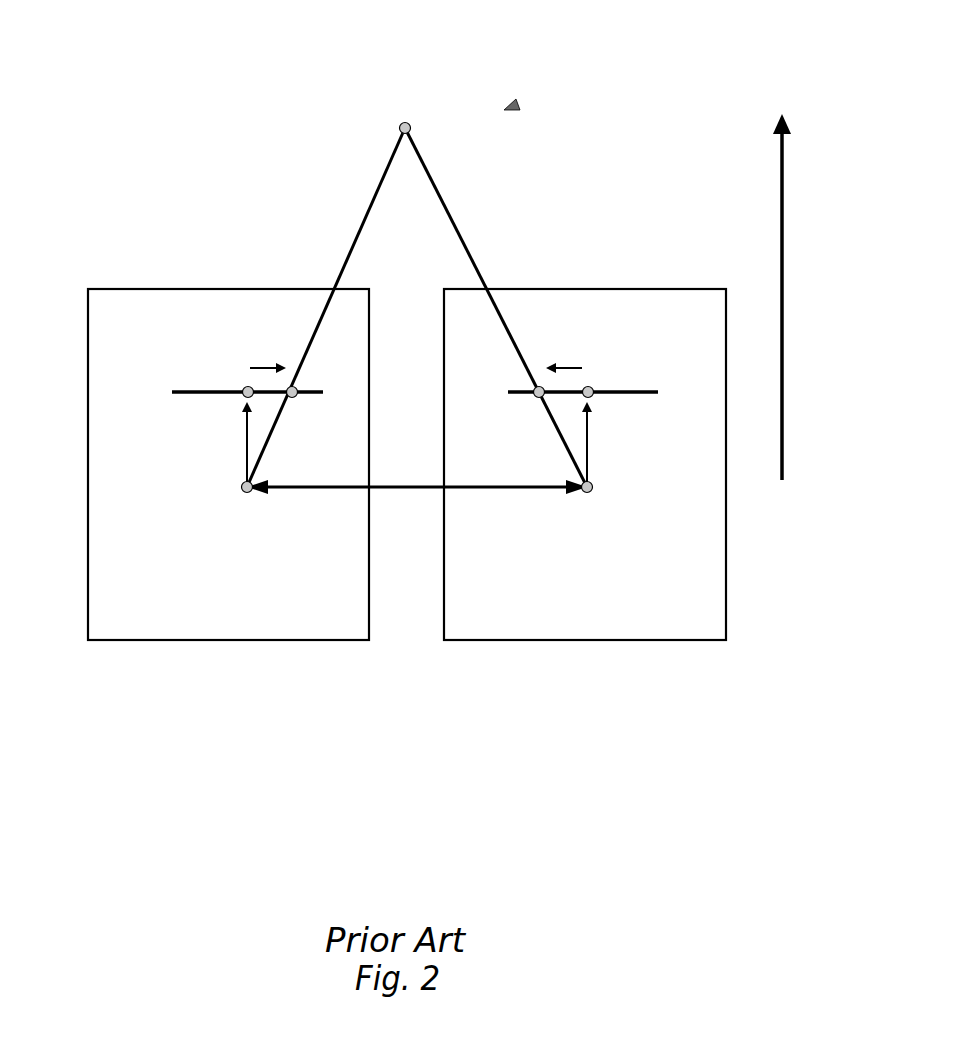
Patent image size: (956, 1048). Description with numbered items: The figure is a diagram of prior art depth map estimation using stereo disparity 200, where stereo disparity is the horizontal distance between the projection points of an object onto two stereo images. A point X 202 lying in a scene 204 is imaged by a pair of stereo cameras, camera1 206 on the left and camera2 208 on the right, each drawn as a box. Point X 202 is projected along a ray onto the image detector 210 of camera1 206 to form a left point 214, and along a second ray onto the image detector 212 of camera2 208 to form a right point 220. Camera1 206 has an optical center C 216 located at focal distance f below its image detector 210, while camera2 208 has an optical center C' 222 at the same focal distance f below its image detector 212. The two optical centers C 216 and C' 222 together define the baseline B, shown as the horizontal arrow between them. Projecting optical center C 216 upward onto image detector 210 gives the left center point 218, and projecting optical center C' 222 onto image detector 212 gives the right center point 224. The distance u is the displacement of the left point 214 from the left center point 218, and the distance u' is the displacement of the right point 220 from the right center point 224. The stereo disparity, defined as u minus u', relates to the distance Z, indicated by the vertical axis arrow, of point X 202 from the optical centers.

The stereo disparity depth map estimation 200 is at (182, 83).
The point X 202 is at (399, 126).
The scene 204 is at (518, 102).
The camera1 206 is at (144, 643).
The camera2 208 is at (500, 643).
The image detector 210 is at (191, 396).
The image detector 212 is at (634, 396).
The left point 214 is at (296, 401).
The optical center C 216 is at (243, 496).
The left center point 218 is at (240, 390).
The right point 220 is at (537, 401).
The optical center C' 222 is at (590, 497).
The right center point 224 is at (598, 391).